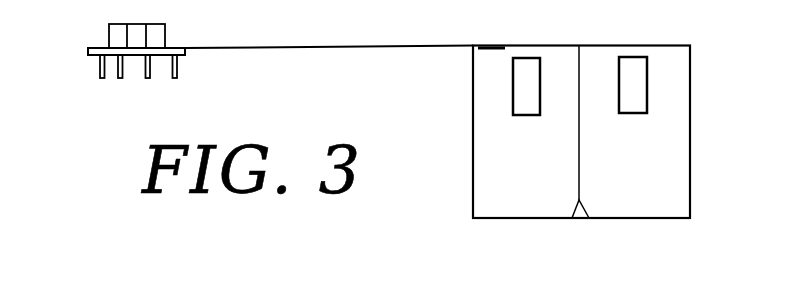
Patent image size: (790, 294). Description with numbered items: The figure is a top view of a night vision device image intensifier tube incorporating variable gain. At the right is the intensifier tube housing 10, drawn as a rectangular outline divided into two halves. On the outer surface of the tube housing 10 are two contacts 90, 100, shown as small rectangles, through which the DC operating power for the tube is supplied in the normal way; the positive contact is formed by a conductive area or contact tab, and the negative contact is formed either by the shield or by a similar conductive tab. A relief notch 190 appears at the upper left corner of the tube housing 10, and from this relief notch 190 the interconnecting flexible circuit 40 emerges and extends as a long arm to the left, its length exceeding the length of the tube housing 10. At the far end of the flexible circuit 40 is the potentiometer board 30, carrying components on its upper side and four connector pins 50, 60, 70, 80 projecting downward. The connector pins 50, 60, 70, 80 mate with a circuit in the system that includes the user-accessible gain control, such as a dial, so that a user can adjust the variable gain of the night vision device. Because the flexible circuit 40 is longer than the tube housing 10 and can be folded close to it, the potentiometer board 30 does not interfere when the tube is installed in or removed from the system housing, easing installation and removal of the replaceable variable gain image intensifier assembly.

The intensifier tube housing 10 is at (667, 142).
The potentiometer board 30 is at (88, 48).
The interconnecting flexible circuit 40 is at (377, 45).
The connector pin 50 is at (99, 70).
The connector pin 60 is at (120, 76).
The connector pin 70 is at (150, 77).
The connector pin 80 is at (178, 68).
The contact 90 is at (542, 68).
The contact 100 is at (633, 62).
The relief notch 190 is at (493, 45).